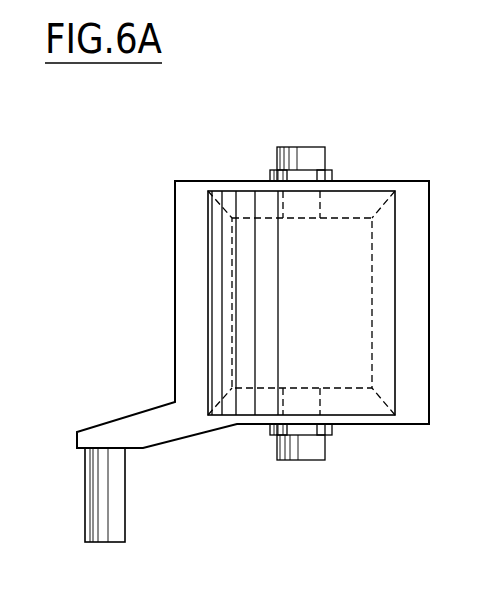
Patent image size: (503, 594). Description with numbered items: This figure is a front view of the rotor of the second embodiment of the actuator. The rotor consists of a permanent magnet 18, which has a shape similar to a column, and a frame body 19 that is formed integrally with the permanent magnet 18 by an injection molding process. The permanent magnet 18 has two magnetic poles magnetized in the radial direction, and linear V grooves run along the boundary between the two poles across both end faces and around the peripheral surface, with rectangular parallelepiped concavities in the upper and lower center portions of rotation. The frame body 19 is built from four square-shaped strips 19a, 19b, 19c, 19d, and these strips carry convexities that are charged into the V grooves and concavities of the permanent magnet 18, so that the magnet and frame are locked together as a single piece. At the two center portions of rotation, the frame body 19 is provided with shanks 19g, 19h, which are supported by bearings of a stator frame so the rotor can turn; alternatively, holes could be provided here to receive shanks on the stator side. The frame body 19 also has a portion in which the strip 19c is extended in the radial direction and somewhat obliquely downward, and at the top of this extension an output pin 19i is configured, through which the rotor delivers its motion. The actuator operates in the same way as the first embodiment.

The permanent magnet 18 is at (250, 263).
The frame body 19 is at (250, 172).
The strip 19a is at (363, 185).
The strip 19b is at (413, 285).
The strip 19c is at (365, 422).
The strip 19d is at (188, 315).
The shank 19g is at (307, 163).
The shank 19h is at (310, 450).
The output pin 19i is at (113, 525).